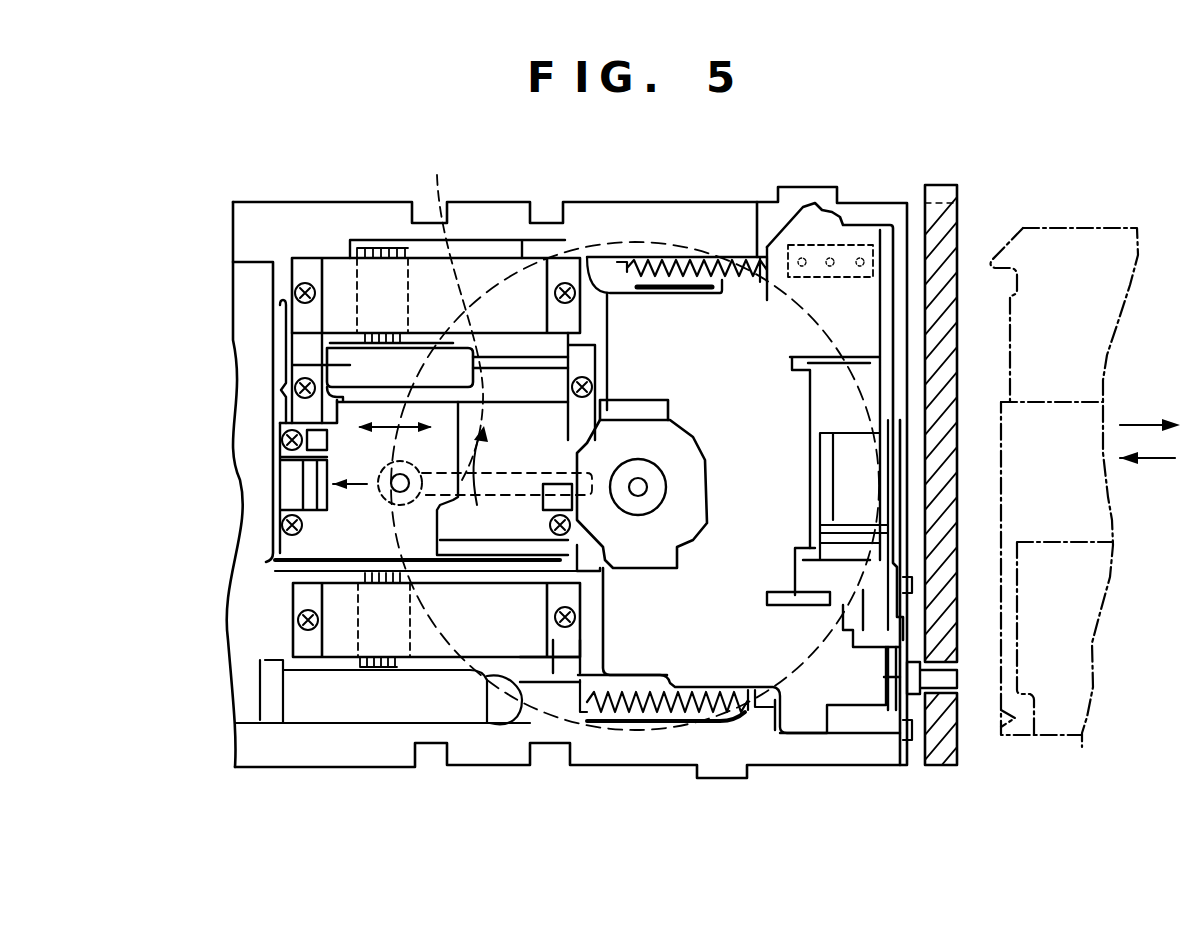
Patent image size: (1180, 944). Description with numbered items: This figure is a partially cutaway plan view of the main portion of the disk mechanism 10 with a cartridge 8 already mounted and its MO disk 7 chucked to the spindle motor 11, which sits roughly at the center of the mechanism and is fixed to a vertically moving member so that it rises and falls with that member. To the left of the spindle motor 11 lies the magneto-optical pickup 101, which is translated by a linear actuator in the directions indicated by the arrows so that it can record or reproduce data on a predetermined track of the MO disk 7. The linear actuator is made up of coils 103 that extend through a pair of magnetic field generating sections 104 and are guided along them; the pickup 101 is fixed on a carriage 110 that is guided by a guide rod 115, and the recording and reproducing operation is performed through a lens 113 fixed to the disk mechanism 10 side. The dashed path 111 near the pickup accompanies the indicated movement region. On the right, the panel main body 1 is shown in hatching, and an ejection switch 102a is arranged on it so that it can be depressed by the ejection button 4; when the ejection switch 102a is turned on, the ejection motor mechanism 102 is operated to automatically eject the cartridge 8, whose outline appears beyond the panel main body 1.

The panel main body 1 is at (949, 186).
The ejection button 4 is at (954, 678).
The MO disk 7 is at (790, 688).
The cartridge 8 is at (1052, 706).
The disk mechanism 10 is at (676, 196).
The spindle motor 11 is at (642, 547).
The magneto-optical pickup 101 is at (390, 512).
The ejection motor mechanism 102 is at (847, 470).
The ejection switch 102a is at (890, 678).
The coils 103 is at (387, 257).
The magnetic field generating sections 104 is at (497, 264).
The carriage 110 is at (365, 360).
The pivot path 111 is at (457, 321).
The lens 113 is at (283, 483).
The guide rod 115 is at (515, 548).